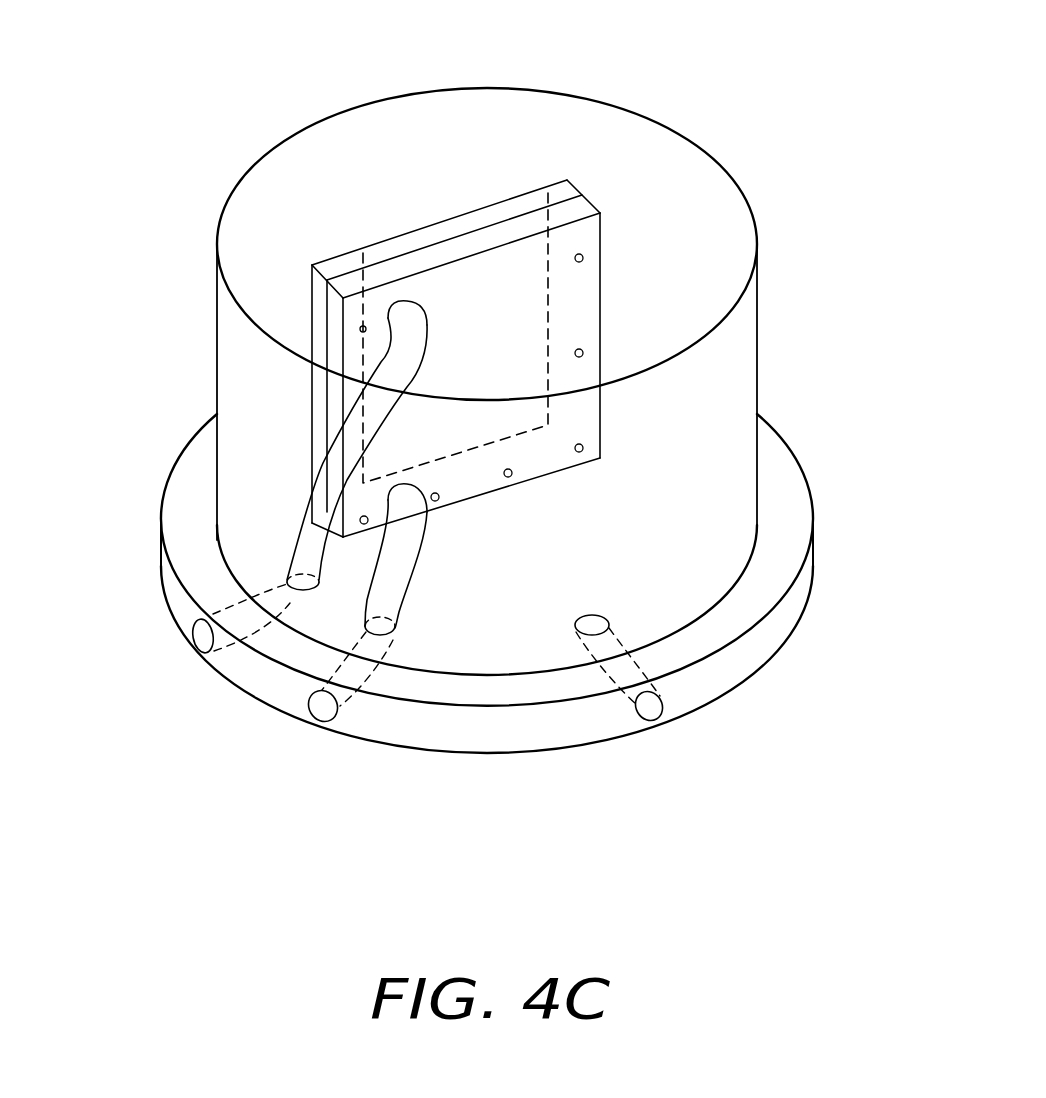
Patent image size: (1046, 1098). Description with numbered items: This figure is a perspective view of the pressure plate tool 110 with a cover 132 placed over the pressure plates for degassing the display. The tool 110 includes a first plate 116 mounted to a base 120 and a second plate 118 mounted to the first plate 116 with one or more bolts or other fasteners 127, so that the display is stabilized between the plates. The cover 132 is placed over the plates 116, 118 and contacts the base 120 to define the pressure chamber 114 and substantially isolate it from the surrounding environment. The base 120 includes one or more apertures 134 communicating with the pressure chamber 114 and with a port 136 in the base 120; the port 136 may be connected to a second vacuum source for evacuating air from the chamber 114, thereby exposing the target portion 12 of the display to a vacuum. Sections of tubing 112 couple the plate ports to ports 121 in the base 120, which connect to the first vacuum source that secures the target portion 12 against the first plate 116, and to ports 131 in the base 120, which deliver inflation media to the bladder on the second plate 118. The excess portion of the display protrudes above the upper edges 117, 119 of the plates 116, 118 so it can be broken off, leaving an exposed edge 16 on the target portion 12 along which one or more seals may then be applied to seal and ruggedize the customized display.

The pressure plate tool 110 is at (797, 422).
The cover 132 is at (760, 300).
The base 120 is at (812, 490).
The pressure chamber 114 is at (717, 491).
The exposed edge 16 is at (477, 213).
The upper edge 117 is at (333, 267).
The first plate 116 is at (312, 290).
The second plate 118 is at (600, 238).
The upper edge 119 is at (572, 212).
The target portion 12 is at (548, 285).
The fastener 127 is at (363, 329).
The tubing 112 is at (320, 482).
The port 121 is at (287, 580).
The port 131 is at (395, 632).
The aperture 134 is at (609, 624).
The port 136 is at (650, 706).